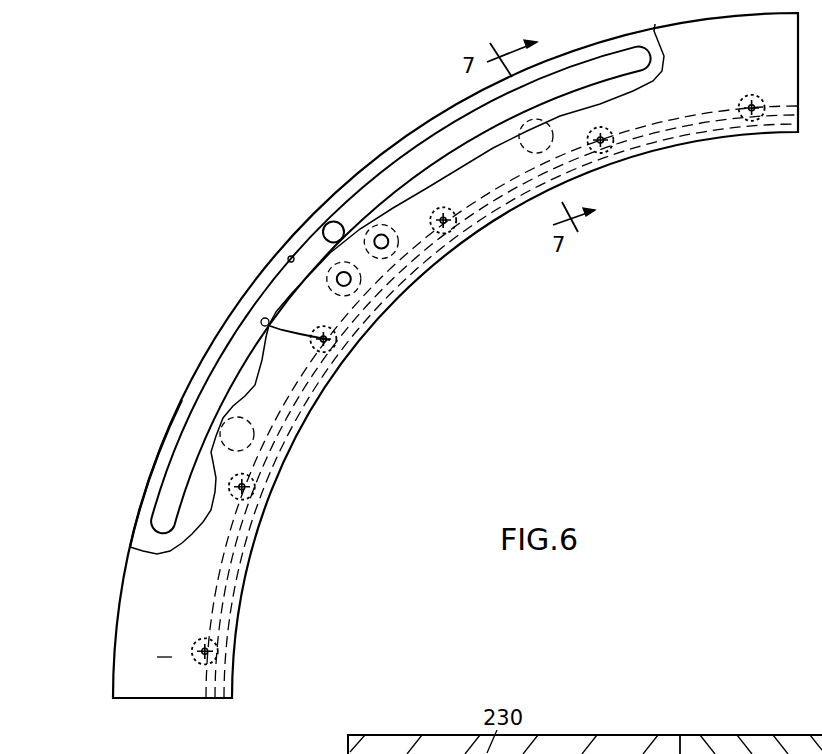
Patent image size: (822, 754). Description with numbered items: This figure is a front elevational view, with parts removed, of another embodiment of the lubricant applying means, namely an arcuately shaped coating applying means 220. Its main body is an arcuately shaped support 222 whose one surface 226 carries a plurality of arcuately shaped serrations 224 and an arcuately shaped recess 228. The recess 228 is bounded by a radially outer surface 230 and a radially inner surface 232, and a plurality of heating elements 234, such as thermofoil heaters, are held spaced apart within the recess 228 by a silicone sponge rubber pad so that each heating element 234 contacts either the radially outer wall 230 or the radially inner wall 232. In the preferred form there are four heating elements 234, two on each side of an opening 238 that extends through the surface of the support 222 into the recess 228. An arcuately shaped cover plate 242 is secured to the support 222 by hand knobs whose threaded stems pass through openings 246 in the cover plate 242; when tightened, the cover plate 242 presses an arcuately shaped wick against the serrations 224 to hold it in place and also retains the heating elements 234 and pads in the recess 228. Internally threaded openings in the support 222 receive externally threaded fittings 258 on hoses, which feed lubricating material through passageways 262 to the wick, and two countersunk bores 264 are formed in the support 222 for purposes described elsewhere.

The arcuately shaped coating applying means 220 is at (173, 293).
The arcuately shaped support 222 is at (175, 418).
The arcuately shaped serrations 224 is at (227, 624).
The one surface 226 is at (163, 697).
The arcuately shaped recess 228 is at (365, 197).
The radially outer surface 230 is at (289, 257).
The radially inner surface 232 is at (338, 351).
The heating elements 234 is at (668, 752).
The opening 238 is at (323, 227).
The arcuately shaped cover plate 242 is at (168, 644).
The openings 246 is at (256, 443).
The externally threaded fittings 258 is at (228, 680).
The passageways 262 is at (227, 652).
The countersunk bores 264 is at (349, 284).